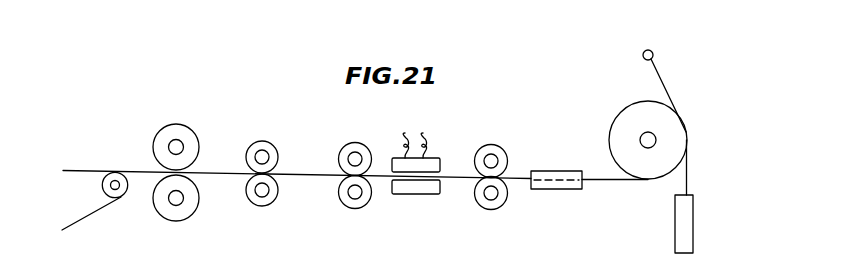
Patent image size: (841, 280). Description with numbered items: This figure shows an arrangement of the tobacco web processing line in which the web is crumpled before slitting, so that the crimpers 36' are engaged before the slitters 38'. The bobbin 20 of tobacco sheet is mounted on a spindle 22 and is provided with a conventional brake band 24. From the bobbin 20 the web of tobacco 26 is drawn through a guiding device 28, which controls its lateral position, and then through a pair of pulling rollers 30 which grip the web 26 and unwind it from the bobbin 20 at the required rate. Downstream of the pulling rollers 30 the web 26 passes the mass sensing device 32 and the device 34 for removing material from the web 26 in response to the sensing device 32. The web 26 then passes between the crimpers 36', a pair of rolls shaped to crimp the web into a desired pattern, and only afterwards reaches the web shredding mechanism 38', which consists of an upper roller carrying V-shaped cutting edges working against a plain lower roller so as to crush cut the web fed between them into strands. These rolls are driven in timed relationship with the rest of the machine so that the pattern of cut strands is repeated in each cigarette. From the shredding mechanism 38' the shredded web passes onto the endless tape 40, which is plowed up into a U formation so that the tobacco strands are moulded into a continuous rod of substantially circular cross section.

The bobbin 20 is at (635, 104).
The spindle 22 is at (641, 139).
The brake band 24 is at (687, 175).
The web of tobacco 26 is at (620, 182).
The guiding device 28 is at (558, 190).
The pulling rollers 30 is at (497, 144).
The mass sensing device 32 is at (417, 194).
The device for removing material 34 is at (352, 142).
The crimpers 36' is at (265, 156).
The web shredding mechanism 38' is at (176, 152).
The endless tape 40 is at (95, 212).